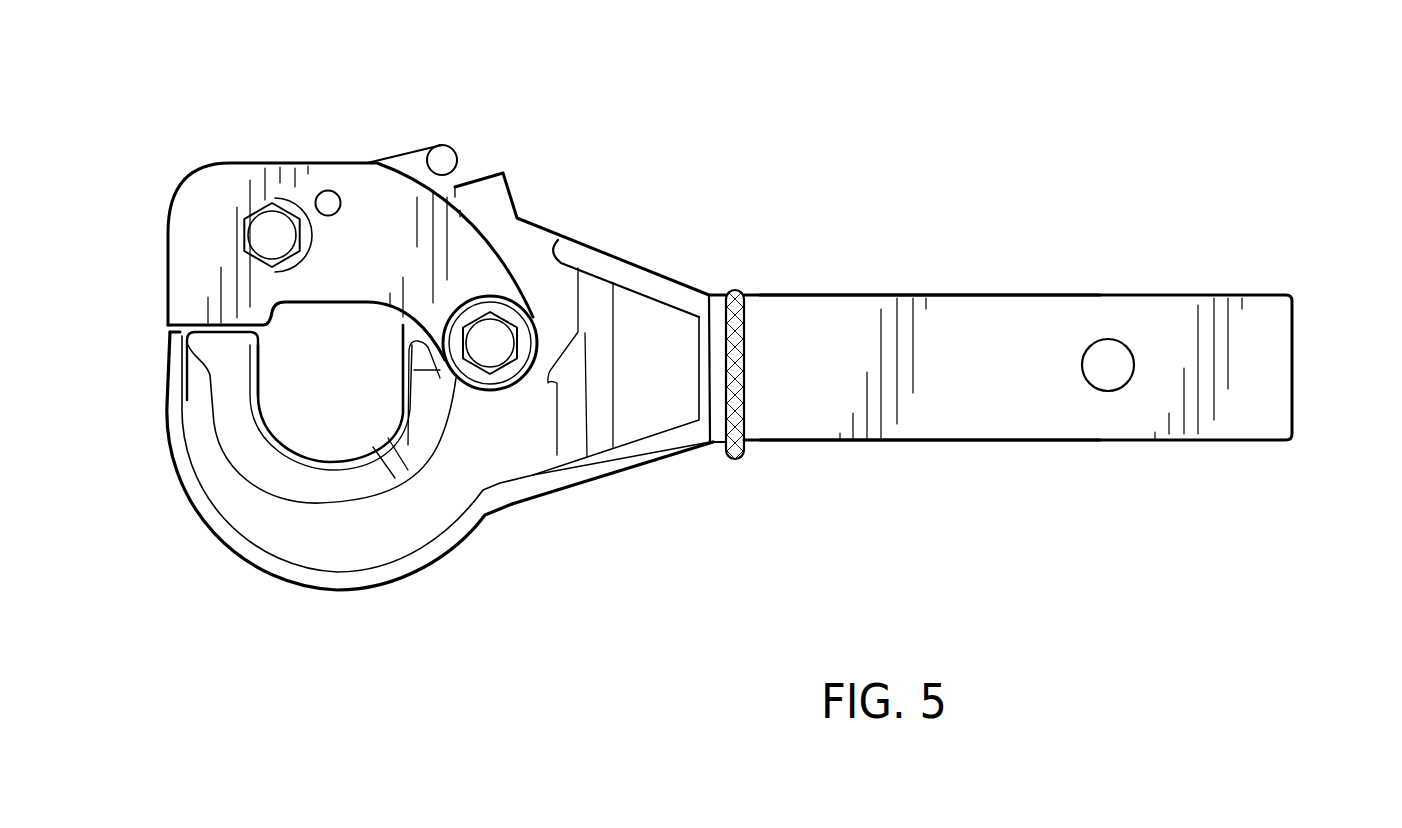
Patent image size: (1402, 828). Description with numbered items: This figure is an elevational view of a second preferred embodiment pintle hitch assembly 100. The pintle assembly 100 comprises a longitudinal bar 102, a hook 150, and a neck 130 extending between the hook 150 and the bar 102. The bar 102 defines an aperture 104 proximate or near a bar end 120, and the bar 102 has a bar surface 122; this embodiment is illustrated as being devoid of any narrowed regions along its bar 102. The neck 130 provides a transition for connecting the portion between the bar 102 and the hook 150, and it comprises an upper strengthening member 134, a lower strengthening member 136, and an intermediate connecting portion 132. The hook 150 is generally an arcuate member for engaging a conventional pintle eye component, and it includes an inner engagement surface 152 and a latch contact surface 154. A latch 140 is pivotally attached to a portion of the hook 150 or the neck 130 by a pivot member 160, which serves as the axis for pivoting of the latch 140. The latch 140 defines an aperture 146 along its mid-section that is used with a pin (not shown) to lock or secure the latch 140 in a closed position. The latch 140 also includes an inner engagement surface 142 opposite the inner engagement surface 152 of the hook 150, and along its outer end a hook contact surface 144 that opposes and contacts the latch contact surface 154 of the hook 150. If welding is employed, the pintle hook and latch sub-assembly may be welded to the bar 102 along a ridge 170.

The pintle hitch assembly 100 is at (1216, 166).
The longitudinal bar 102 is at (1020, 417).
The aperture 104 is at (1094, 362).
The bar end 120 is at (1293, 365).
The bar surface 122 is at (815, 300).
The neck 130 is at (603, 263).
The intermediate connecting portion 132 is at (652, 408).
The upper strengthening member 134 is at (670, 288).
The lower strengthening member 136 is at (710, 442).
The latch 140 is at (255, 182).
The inner engagement surface 142 is at (338, 305).
The hook contact surface 144 is at (172, 325).
The aperture 146 is at (328, 190).
The hook 150 is at (357, 550).
The inner engagement surface 152 is at (302, 445).
The latch contact surface 154 is at (175, 330).
The pivot member 160 is at (498, 330).
The ridge 170 is at (743, 415).